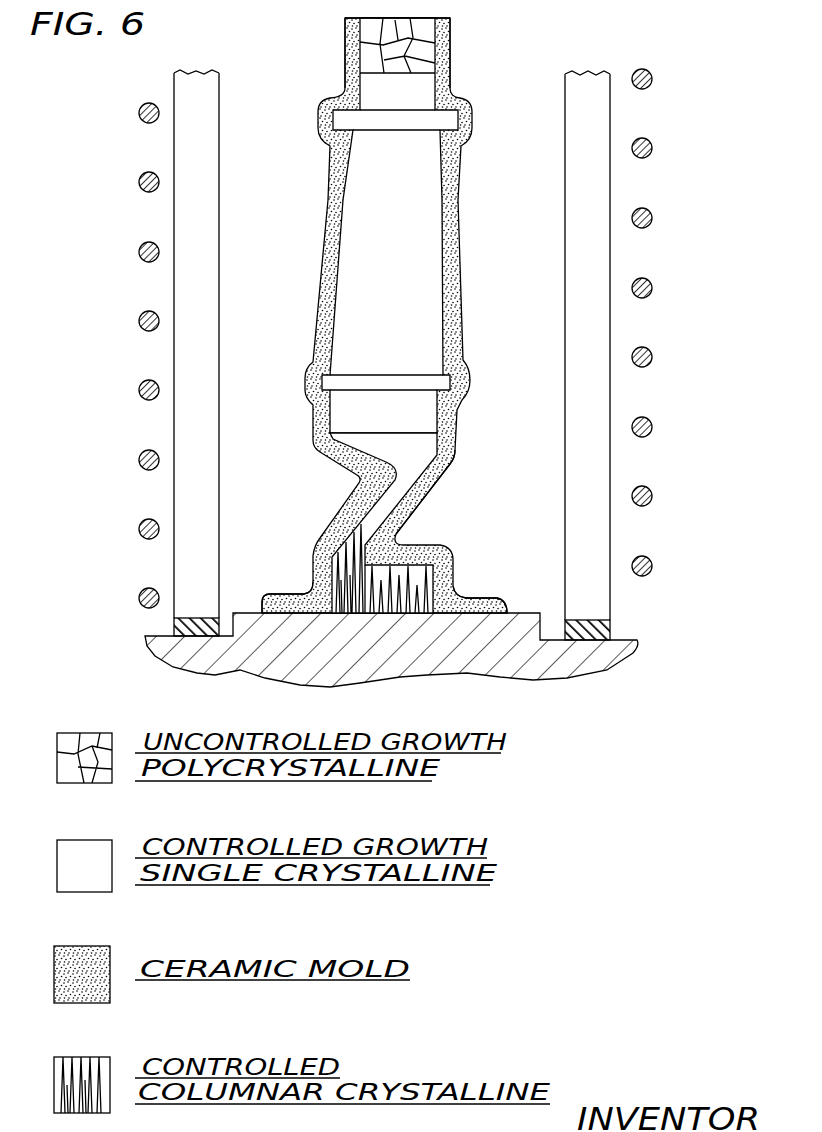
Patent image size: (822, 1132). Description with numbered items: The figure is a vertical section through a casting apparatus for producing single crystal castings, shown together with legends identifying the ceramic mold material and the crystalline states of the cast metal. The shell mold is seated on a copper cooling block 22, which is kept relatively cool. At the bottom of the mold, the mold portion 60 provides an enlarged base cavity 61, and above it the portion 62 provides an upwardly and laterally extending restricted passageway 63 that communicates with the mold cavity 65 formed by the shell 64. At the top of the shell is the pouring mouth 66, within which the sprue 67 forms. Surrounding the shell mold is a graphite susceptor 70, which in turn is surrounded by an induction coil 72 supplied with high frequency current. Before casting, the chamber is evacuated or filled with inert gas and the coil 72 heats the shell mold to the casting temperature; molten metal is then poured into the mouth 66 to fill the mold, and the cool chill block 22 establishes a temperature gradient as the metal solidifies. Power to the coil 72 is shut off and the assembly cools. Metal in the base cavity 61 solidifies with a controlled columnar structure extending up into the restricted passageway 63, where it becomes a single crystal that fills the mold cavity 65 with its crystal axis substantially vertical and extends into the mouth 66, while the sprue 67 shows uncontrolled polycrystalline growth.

The cooling block 22 is at (500, 658).
The mold portion 60 is at (452, 594).
The base cavity 61 is at (410, 582).
The portion 62 is at (447, 473).
The restricted passageway 63 is at (378, 506).
The shell 64 is at (450, 250).
The mold cavity 65 is at (414, 316).
The pouring mouth 66 is at (443, 68).
The sprue 67 is at (423, 40).
The graphite susceptor 70 is at (598, 186).
The induction coil 72 is at (650, 225).